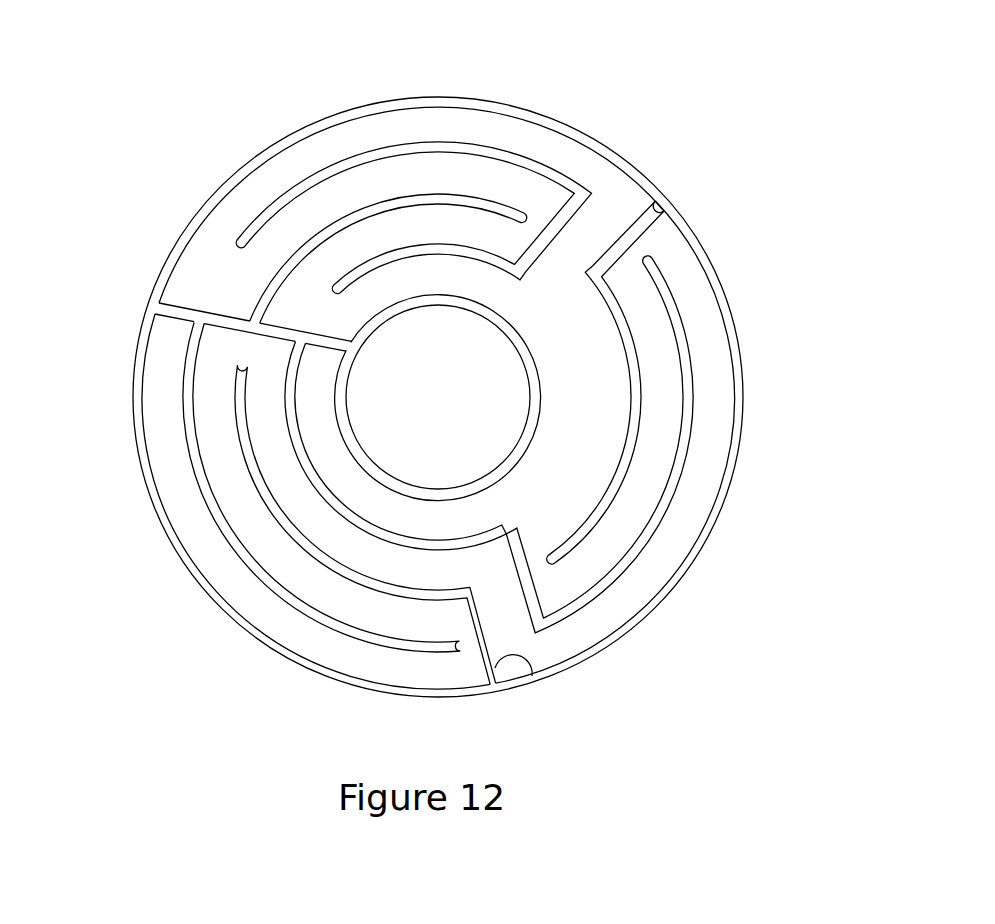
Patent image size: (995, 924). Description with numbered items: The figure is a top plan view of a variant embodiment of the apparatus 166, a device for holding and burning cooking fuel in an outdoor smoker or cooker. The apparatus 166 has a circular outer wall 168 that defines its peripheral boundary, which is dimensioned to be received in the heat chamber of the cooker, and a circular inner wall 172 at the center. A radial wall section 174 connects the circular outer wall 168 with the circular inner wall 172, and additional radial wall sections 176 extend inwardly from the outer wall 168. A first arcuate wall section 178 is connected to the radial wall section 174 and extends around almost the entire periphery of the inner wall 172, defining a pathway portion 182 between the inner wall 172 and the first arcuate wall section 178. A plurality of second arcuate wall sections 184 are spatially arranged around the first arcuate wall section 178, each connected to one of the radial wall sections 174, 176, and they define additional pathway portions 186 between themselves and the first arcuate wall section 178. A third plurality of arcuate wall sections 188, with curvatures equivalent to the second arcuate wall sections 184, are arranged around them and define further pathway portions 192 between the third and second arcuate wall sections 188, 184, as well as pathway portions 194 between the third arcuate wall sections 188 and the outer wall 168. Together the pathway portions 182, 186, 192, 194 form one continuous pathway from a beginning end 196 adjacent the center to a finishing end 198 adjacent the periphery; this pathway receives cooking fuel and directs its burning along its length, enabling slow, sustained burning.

The apparatus 166 is at (582, 80).
The circular outer wall 168 is at (214, 190).
The circular inner wall 172 is at (415, 297).
The radial wall section 174 is at (190, 300).
The radial wall sections 176 is at (660, 212).
The first arcuate wall section 178 is at (652, 258).
The pathway portion 182 is at (552, 414).
The second arcuate wall sections 184 is at (520, 212).
The pathway portions 186 is at (449, 220).
The third arcuate wall sections 188 is at (320, 168).
The pathway portions 192 is at (289, 221).
The pathway portions 194 is at (356, 148).
The beginning end 196 is at (318, 363).
The finishing end 198 is at (166, 318).